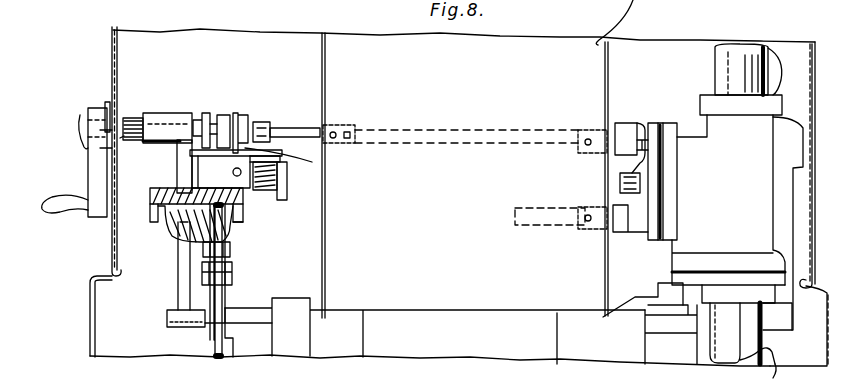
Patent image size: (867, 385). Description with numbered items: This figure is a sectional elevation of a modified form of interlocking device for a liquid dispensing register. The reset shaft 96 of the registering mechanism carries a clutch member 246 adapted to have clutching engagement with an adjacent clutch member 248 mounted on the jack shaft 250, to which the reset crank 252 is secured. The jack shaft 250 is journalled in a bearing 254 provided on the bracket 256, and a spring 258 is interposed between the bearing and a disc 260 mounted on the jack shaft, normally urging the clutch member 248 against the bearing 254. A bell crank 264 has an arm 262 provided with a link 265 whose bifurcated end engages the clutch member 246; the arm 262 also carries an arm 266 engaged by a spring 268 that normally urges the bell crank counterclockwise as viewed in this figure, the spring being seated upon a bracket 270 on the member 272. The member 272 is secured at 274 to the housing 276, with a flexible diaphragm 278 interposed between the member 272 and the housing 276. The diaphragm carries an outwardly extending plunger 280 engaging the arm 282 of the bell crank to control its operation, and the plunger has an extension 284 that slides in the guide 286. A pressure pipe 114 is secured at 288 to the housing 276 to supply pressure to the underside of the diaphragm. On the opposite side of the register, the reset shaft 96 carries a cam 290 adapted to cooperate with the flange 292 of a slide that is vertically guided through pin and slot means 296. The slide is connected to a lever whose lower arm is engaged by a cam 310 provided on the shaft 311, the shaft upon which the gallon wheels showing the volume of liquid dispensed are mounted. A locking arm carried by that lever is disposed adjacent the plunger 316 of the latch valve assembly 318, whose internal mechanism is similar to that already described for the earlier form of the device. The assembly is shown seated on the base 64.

The base 64 is at (784, 374).
The reset shaft 96 is at (400, 128).
The pressure pipe 114 is at (233, 342).
The clutch member 246 is at (226, 114).
The clutch member 248 is at (205, 112).
The jack shaft 250 is at (113, 90).
The reset crank 252 is at (72, 122).
The bearing 254 is at (158, 112).
The bracket 256 is at (175, 283).
The spring 258 is at (130, 116).
The disc 260 is at (122, 138).
The arm 262 is at (256, 122).
The bell crank 264 is at (246, 152).
The link 265 is at (243, 115).
The arm 266 is at (280, 158).
The spring 268 is at (277, 174).
The bracket 270 is at (269, 198).
The member 272 is at (108, 218).
The securing point 274 is at (167, 220).
The housing 276 is at (173, 232).
The flexible diaphragm 278 is at (230, 224).
The plunger 280 is at (192, 182).
The arm 282 is at (200, 160).
The extension 284 is at (170, 228).
The guide 286 is at (180, 292).
The securing point 288 is at (228, 250).
The cam 290 is at (606, 132).
The flange 292 is at (642, 123).
The pin and slot means 296 is at (650, 140).
The cam 310 is at (618, 232).
The shaft 311 is at (530, 208).
The plunger 316 is at (677, 172).
The latch valve assembly 318 is at (730, 225).